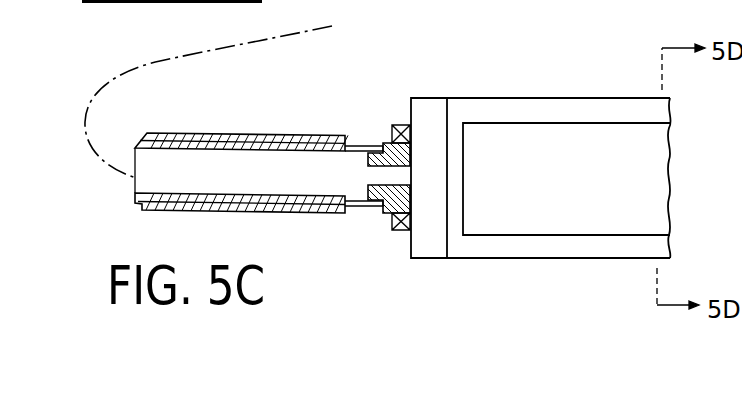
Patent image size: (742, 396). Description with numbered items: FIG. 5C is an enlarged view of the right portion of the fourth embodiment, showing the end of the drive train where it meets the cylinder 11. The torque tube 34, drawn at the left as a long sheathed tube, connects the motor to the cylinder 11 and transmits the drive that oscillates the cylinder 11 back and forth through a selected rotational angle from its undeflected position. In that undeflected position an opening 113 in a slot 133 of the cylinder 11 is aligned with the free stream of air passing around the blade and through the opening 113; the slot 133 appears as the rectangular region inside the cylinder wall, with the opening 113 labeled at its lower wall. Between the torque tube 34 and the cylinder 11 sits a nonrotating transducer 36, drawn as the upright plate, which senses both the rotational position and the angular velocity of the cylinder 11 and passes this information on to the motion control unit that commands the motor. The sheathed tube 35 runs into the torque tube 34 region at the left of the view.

The cylinder 11 is at (539, 98).
The torque tube 34 is at (385, 150).
The braided tube 35 is at (228, 134).
The nonrotating transducer 36 is at (430, 108).
The opening 113 is at (538, 223).
The slot 133 is at (603, 130).